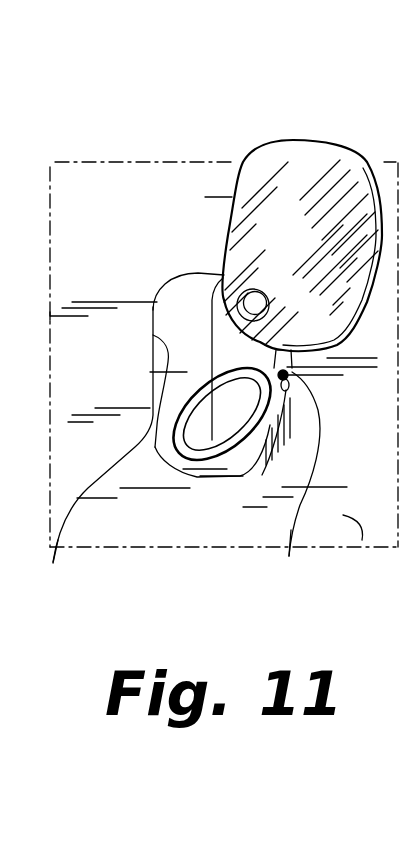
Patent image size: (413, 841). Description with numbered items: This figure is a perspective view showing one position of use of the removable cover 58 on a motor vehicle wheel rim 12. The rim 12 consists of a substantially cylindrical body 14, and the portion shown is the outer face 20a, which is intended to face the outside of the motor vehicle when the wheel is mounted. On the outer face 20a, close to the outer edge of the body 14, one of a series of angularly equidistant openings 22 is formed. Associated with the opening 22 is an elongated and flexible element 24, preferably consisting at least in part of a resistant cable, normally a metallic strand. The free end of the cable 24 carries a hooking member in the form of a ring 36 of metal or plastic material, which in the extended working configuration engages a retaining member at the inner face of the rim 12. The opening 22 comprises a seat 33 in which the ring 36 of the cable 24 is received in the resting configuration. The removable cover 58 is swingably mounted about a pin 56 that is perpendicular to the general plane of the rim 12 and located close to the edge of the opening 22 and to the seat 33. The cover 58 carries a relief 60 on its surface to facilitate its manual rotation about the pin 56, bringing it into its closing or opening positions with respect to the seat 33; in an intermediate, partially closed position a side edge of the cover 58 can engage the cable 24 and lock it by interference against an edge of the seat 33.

The rim 12 is at (72, 174).
The outer face 20a is at (148, 208).
The pin 56 is at (253, 289).
The relief 60 is at (292, 275).
The removable cover 58 is at (337, 207).
The seat 33 is at (47, 571).
The opening 22 is at (154, 455).
The ring 36 is at (262, 477).
The elongated and flexible element 24 is at (287, 563).
The body 14 is at (362, 540).